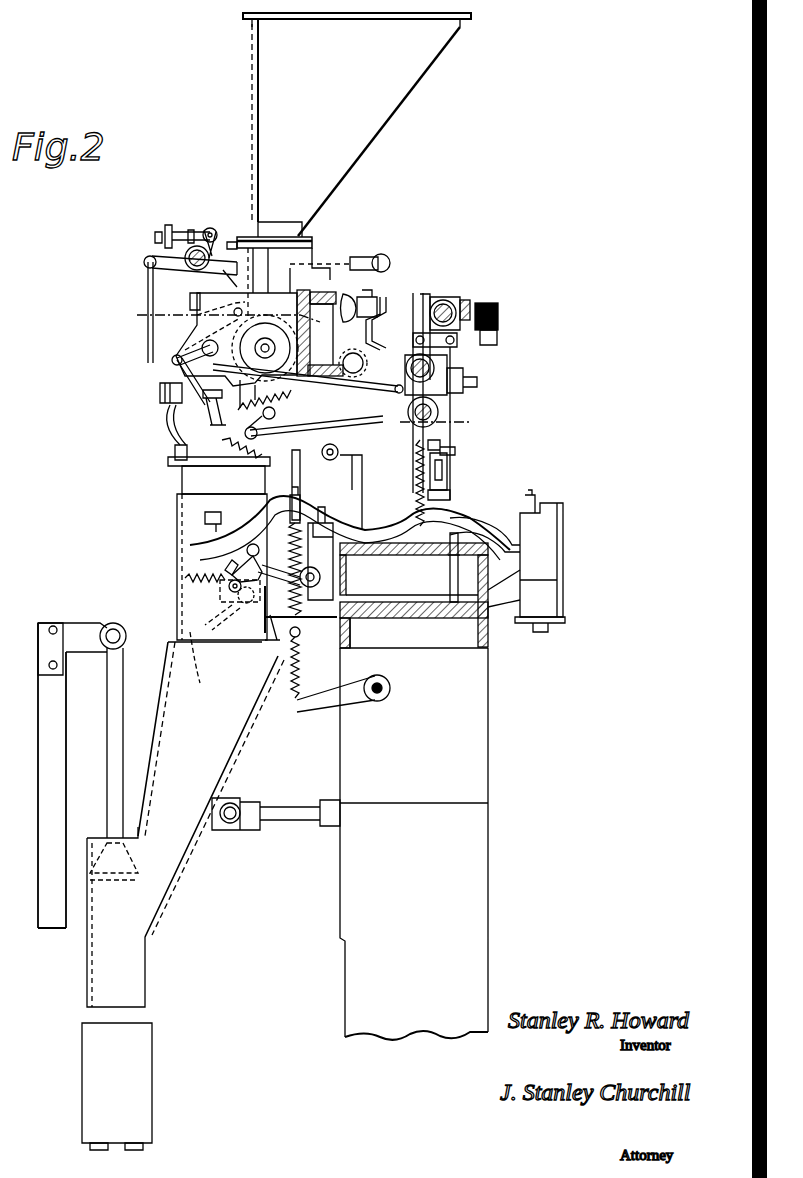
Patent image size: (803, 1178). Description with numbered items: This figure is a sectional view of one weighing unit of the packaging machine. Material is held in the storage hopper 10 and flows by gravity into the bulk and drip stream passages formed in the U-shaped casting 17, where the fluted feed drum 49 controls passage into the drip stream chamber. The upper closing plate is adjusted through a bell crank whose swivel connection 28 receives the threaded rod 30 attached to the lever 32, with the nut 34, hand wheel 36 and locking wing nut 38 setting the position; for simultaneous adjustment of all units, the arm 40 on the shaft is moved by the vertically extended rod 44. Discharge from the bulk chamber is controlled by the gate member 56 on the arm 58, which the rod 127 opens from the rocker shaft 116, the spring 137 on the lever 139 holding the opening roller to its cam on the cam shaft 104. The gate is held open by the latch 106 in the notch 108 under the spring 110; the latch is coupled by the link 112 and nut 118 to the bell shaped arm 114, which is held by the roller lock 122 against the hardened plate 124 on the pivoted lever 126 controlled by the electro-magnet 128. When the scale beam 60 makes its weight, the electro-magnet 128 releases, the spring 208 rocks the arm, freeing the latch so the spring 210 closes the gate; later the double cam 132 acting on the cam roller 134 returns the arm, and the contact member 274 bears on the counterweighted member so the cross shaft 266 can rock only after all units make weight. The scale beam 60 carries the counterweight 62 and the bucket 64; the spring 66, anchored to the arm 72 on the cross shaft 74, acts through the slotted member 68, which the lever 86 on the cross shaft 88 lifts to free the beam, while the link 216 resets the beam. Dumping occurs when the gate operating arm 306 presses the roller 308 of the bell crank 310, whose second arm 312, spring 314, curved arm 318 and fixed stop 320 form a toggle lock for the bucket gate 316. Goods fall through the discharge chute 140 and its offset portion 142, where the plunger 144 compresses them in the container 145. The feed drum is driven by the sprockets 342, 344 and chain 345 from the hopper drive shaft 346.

The storage hopper 10 is at (257, 97).
The U-shaped casting 17 is at (180, 337).
The swivel connection 28 is at (190, 233).
The threaded rod 30 is at (203, 232).
The lever 32 is at (212, 247).
The nut 34 is at (192, 230).
The hand wheel 36 is at (167, 226).
The locking wing nut 38 is at (156, 233).
The arm 40 is at (168, 270).
The vertically extended rod 44 is at (148, 332).
The fluted feed drum 49 is at (259, 338).
The gate member 56 is at (173, 445).
The arm 58 is at (170, 410).
The scale beam 60 is at (360, 458).
The counterweight 62 is at (453, 513).
The bucket 64 is at (200, 497).
The spring 66 is at (277, 640).
The slotted member 68 is at (207, 537).
The arm 72 is at (317, 717).
The cross shaft 74 is at (378, 680).
The lever 86 is at (334, 456).
The cross shaft 88 is at (336, 450).
The cam shaft 104 is at (458, 358).
The latch 106 is at (182, 467).
The notch 108 is at (180, 438).
The spring 110 is at (187, 487).
The link 112 is at (314, 427).
The bell shaped arm 114 is at (308, 378).
The rocker shaft 116 is at (458, 435).
The nut 118 is at (223, 480).
The roller lock 122 is at (420, 294).
The hardened plate 124 is at (416, 292).
The pivoted lever 126 is at (493, 356).
The rod 127 is at (163, 385).
The electro-magnet 128 is at (500, 314).
The double cam 132 is at (460, 393).
The cam roller 134 is at (414, 288).
The spring 137 is at (373, 550).
The lever 139 is at (460, 493).
The discharge chute 140 is at (240, 743).
The offset portion 142 is at (147, 962).
The plunger 144 is at (112, 755).
The container 145 is at (148, 1048).
The spring 208 is at (452, 454).
The spring 210 is at (264, 391).
The link 216 is at (457, 465).
The cross shaft 266 is at (368, 259).
The contact member 274 is at (390, 298).
The gate operating arm 306 is at (262, 626).
The roller 308 is at (200, 542).
The bell crank 310 is at (187, 573).
The second arm 312 is at (180, 613).
The spring 314 is at (173, 597).
The gate 316 is at (214, 663).
The curved arm 318 is at (200, 552).
The fixed stop 320 is at (182, 577).
The sprocket 342 is at (210, 314).
The sprocket 344 is at (470, 422).
The chain 345 is at (336, 404).
The hopper drive shaft 346 is at (457, 410).